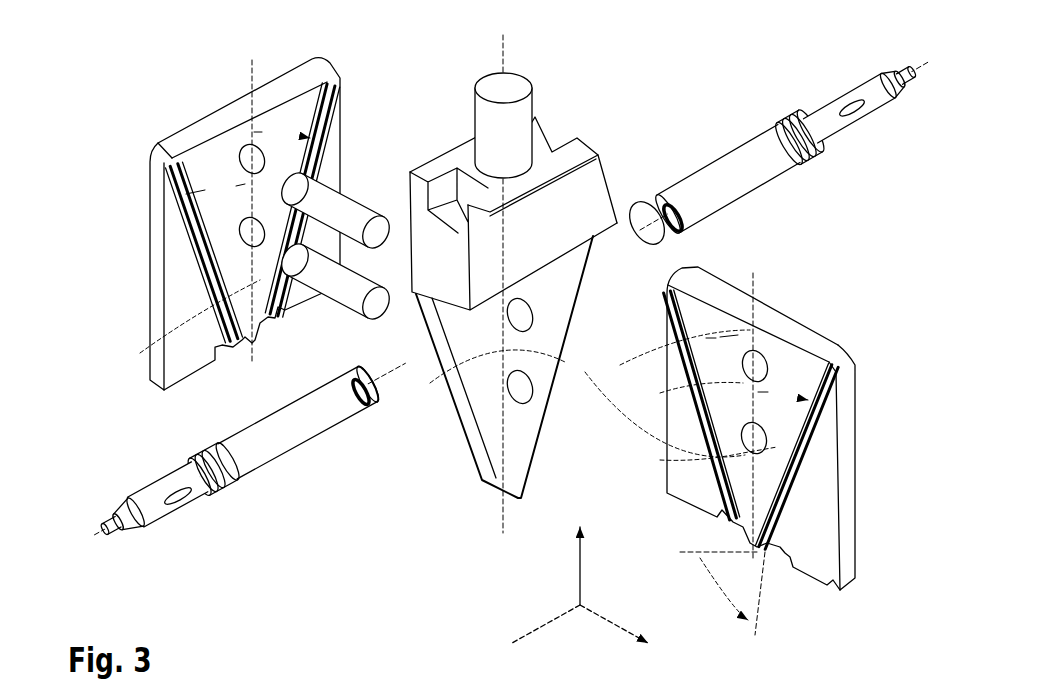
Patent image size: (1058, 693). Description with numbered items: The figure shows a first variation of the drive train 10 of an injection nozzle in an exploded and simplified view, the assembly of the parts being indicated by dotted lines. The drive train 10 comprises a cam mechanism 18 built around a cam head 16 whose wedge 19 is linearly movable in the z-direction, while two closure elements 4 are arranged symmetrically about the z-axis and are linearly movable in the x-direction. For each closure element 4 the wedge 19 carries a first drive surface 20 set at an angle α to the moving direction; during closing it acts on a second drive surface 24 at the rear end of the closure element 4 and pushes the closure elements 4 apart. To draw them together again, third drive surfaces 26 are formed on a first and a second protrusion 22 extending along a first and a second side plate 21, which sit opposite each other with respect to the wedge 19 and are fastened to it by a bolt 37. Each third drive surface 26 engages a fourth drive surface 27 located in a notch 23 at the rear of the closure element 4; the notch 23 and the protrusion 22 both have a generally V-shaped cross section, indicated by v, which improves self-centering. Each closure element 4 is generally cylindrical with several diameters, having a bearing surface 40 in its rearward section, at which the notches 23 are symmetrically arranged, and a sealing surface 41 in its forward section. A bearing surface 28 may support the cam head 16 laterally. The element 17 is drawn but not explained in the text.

The closure element 4 is at (153, 452).
The drive train 10 is at (158, 88).
The cam head 16 is at (616, 68).
The cylindrical post 17 is at (523, 117).
The cam mechanism 18 is at (774, 60).
The wedge 19 is at (446, 437).
The first drive surface 20 is at (492, 485).
The side plate 21 is at (176, 84).
The protrusion 22 is at (320, 108).
The notch 23 is at (336, 360).
The second drive surface 24 is at (357, 368).
The third drive surface 26 is at (172, 182).
The fourth drive surface 27 is at (360, 410).
The bearing surface 28 is at (158, 220).
The bolt 37 is at (240, 157).
The bearing surface 40 is at (210, 422).
The sealing surface 41 is at (140, 548).